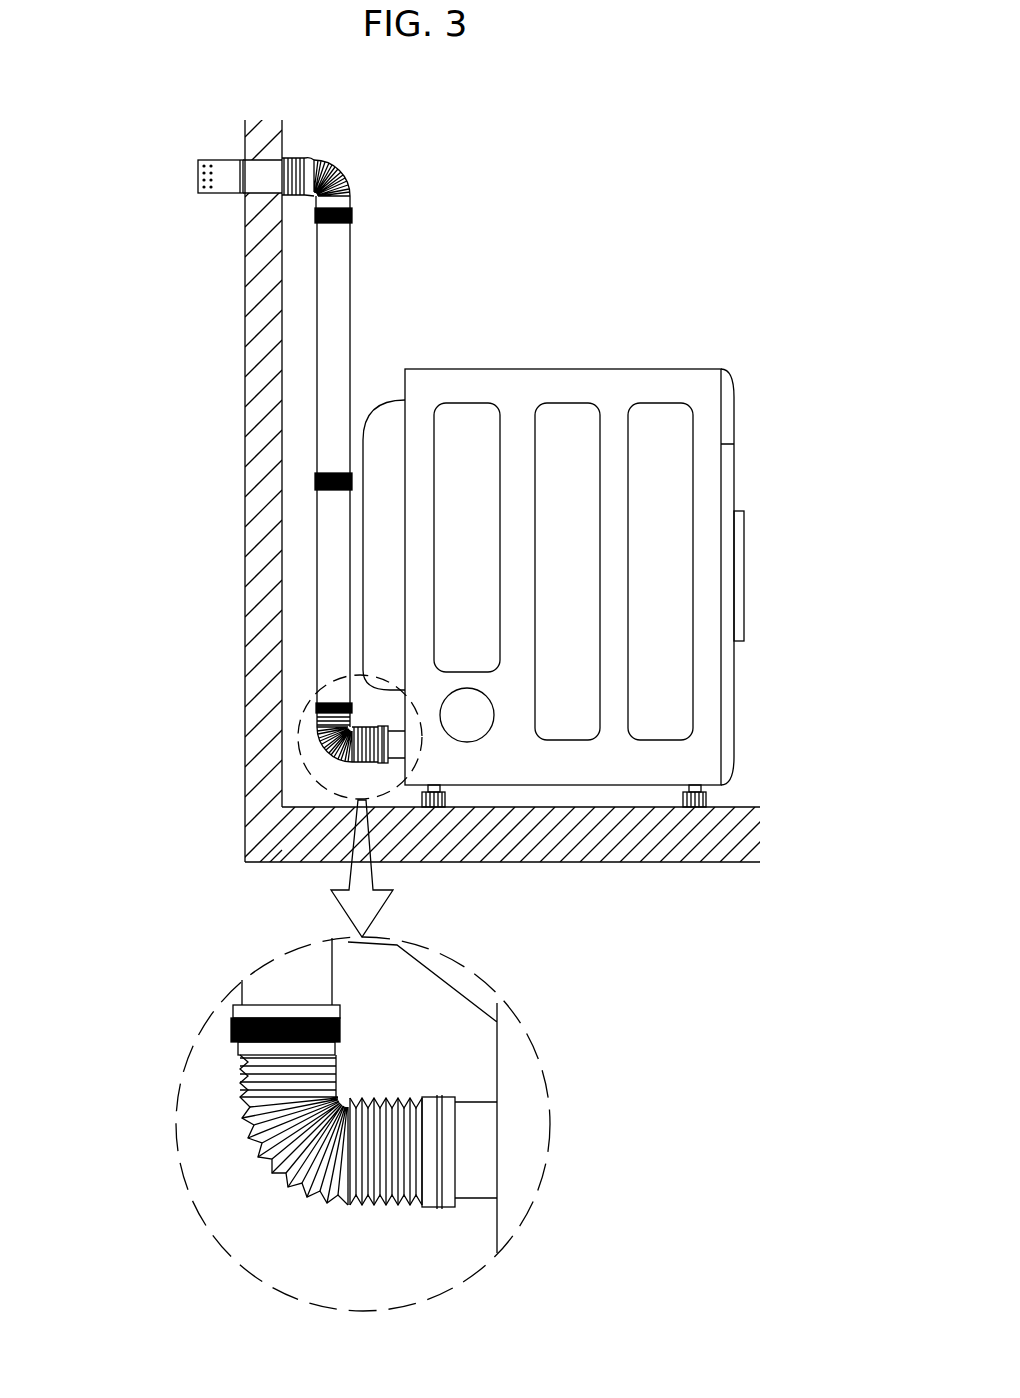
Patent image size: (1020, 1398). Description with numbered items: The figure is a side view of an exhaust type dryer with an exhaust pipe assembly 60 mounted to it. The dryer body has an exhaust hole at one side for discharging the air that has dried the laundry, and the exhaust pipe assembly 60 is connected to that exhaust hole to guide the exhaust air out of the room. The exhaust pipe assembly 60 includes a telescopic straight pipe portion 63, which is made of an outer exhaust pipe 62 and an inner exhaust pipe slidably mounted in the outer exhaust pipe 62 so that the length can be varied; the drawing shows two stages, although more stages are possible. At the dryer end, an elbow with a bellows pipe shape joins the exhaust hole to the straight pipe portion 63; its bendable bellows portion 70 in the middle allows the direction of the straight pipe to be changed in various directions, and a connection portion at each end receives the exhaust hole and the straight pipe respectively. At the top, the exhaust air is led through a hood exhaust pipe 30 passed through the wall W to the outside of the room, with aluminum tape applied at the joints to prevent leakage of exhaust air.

The hood exhaust pipe 30 is at (218, 160).
The wall W is at (260, 243).
The exhaust pipe assembly 60 is at (281, 422).
The outer exhaust pipe 62 is at (330, 377).
The straight pipe portion 63 is at (208, 463).
The bellows portion 70 is at (322, 1190).